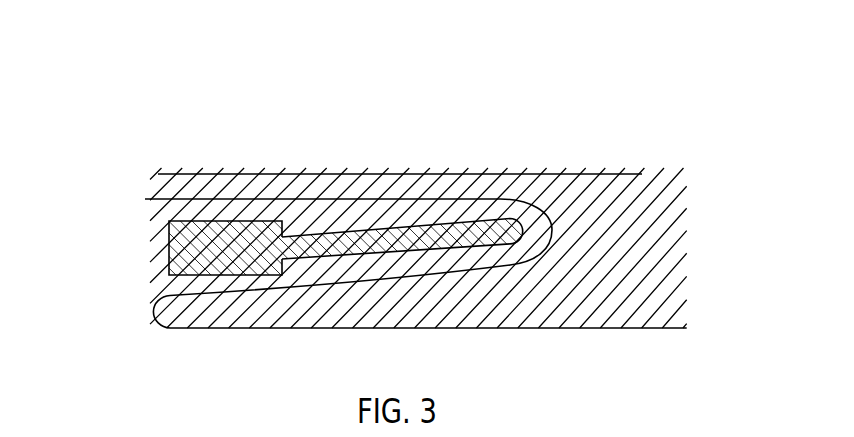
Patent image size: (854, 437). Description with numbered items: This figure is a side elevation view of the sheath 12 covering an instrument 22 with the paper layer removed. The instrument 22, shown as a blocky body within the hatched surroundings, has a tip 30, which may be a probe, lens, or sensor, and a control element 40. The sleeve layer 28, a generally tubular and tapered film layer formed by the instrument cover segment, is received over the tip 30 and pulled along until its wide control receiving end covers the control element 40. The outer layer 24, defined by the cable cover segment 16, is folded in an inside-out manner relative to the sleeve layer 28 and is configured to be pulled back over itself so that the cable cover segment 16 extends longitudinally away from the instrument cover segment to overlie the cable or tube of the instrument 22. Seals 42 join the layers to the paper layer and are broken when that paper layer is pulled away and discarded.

The sheath 12 is at (665, 103).
The cable cover segment 16 is at (140, 198).
The instrument 22 is at (163, 278).
The outer layer 24 is at (596, 176).
The sleeve layer 28 is at (505, 199).
The tip 30 is at (425, 222).
The control element 40 is at (255, 232).
The seals 42 is at (151, 312).